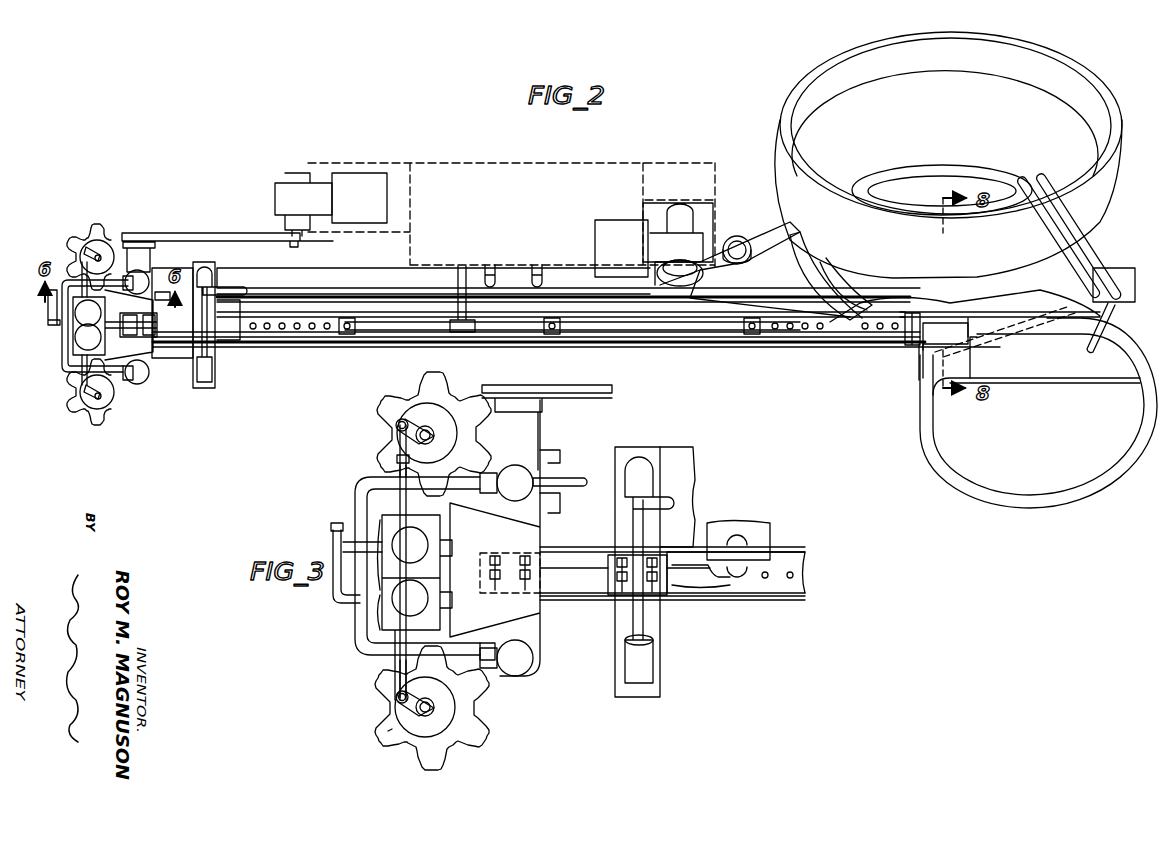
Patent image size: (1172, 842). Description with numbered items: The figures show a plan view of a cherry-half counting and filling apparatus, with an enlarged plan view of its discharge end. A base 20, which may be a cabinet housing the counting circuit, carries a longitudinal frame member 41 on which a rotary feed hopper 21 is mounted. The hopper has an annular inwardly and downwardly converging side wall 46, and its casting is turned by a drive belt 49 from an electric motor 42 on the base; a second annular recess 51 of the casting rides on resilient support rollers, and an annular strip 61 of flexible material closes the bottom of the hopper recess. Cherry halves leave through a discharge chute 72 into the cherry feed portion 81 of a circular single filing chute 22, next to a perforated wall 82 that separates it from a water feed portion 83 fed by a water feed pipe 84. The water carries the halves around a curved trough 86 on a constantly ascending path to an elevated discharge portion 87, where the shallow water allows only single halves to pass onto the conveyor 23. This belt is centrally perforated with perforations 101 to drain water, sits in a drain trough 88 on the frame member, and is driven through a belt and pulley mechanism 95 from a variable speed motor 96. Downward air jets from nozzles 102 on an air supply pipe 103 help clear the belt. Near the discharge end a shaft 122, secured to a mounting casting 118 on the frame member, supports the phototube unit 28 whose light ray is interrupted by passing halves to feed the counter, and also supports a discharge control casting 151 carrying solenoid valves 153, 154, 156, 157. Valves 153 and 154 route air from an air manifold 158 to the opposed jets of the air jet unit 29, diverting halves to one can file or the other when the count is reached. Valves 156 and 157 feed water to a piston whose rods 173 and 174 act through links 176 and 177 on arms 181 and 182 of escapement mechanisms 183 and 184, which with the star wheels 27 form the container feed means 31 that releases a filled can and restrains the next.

In FIG. 2, the base 20 is at (539, 197).
In FIG. 2, the rotary feed hopper 21 is at (1105, 152).
In FIG. 2, the single filing chute 22 is at (976, 496).
In FIG. 2, the conveyor 23 is at (798, 335).
In FIG. 3, the conveyor 23 is at (800, 577).
In FIG. 2, the star wheel 27 is at (118, 416).
In FIG. 3, the star wheel 27 is at (385, 394).
In FIG. 2, the phototube unit 28 is at (213, 389).
In FIG. 3, the phototube unit 28 is at (646, 444).
In FIG. 2, the air jet unit 29 is at (152, 384).
In FIG. 3, the air jet unit 29 is at (350, 496).
In FIG. 3, the container feed means 31 is at (385, 732).
In FIG. 2, the frame member 41 is at (771, 291).
In FIG. 3, the frame member 41 is at (678, 456).
In FIG. 2, the electric motor 42 is at (625, 253).
In FIG. 2, the side wall 46 is at (954, 118).
In FIG. 2, the drive belt 49 is at (773, 235).
In FIG. 2, the second annular recess 51 is at (848, 295).
In FIG. 2, the annular strip 61 is at (963, 172).
In FIG. 2, the discharge chute 72 is at (952, 343).
In FIG. 2, the cherry feed portion 81 is at (928, 370).
In FIG. 2, the perforated wall 82 is at (972, 365).
In FIG. 2, the water feed portion 83 is at (1058, 378).
In FIG. 2, the water feed pipe 84 is at (1112, 313).
In FIG. 2, the curved trough 86 is at (1098, 478).
In FIG. 2, the elevated discharge portion 87 is at (1005, 324).
In FIG. 2, the drain trough 88 is at (708, 345).
In FIG. 3, the drain trough 88 is at (741, 601).
In FIG. 2, the belt and pulley mechanism 95 is at (205, 234).
In FIG. 3, the belt and pulley mechanism 95 is at (568, 396).
In FIG. 2, the variable speed motor 96 is at (367, 200).
In FIG. 2, the central perforations 101 is at (285, 331).
In FIG. 3, the central perforations 101 is at (788, 578).
In FIG. 2, the nozzles 102 is at (550, 335).
In FIG. 2, the air supply pipe 103 is at (622, 331).
In FIG. 2, the mounting casting 118 is at (245, 300).
In FIG. 3, the mounting casting 118 is at (760, 553).
In FIG. 2, the shaft 122 is at (222, 333).
In FIG. 3, the shaft 122 is at (684, 578).
In FIG. 3, the discharge control casting 151 is at (532, 607).
In FIG. 3, the solenoid valve 153 is at (526, 491).
In FIG. 3, the solenoid valve 154 is at (526, 666).
In FIG. 3, the solenoid valve 156 is at (422, 553).
In FIG. 3, the solenoid valve 157 is at (422, 606).
In FIG. 2, the air manifold 158 is at (63, 350).
In FIG. 3, the air manifold 158 is at (364, 516).
In FIG. 3, the piston rod 173 is at (358, 645).
In FIG. 3, the piston rod 174 is at (398, 470).
In FIG. 3, the link 176 is at (400, 687).
In FIG. 3, the link 177 is at (400, 425).
In FIG. 3, the arm 181 is at (431, 699).
In FIG. 3, the arm 182 is at (422, 427).
In FIG. 2, the escapement mechanism 183 is at (94, 404).
In FIG. 3, the escapement mechanism 183 is at (443, 716).
In FIG. 2, the escapement mechanism 184 is at (99, 252).
In FIG. 3, the escapement mechanism 184 is at (456, 434).